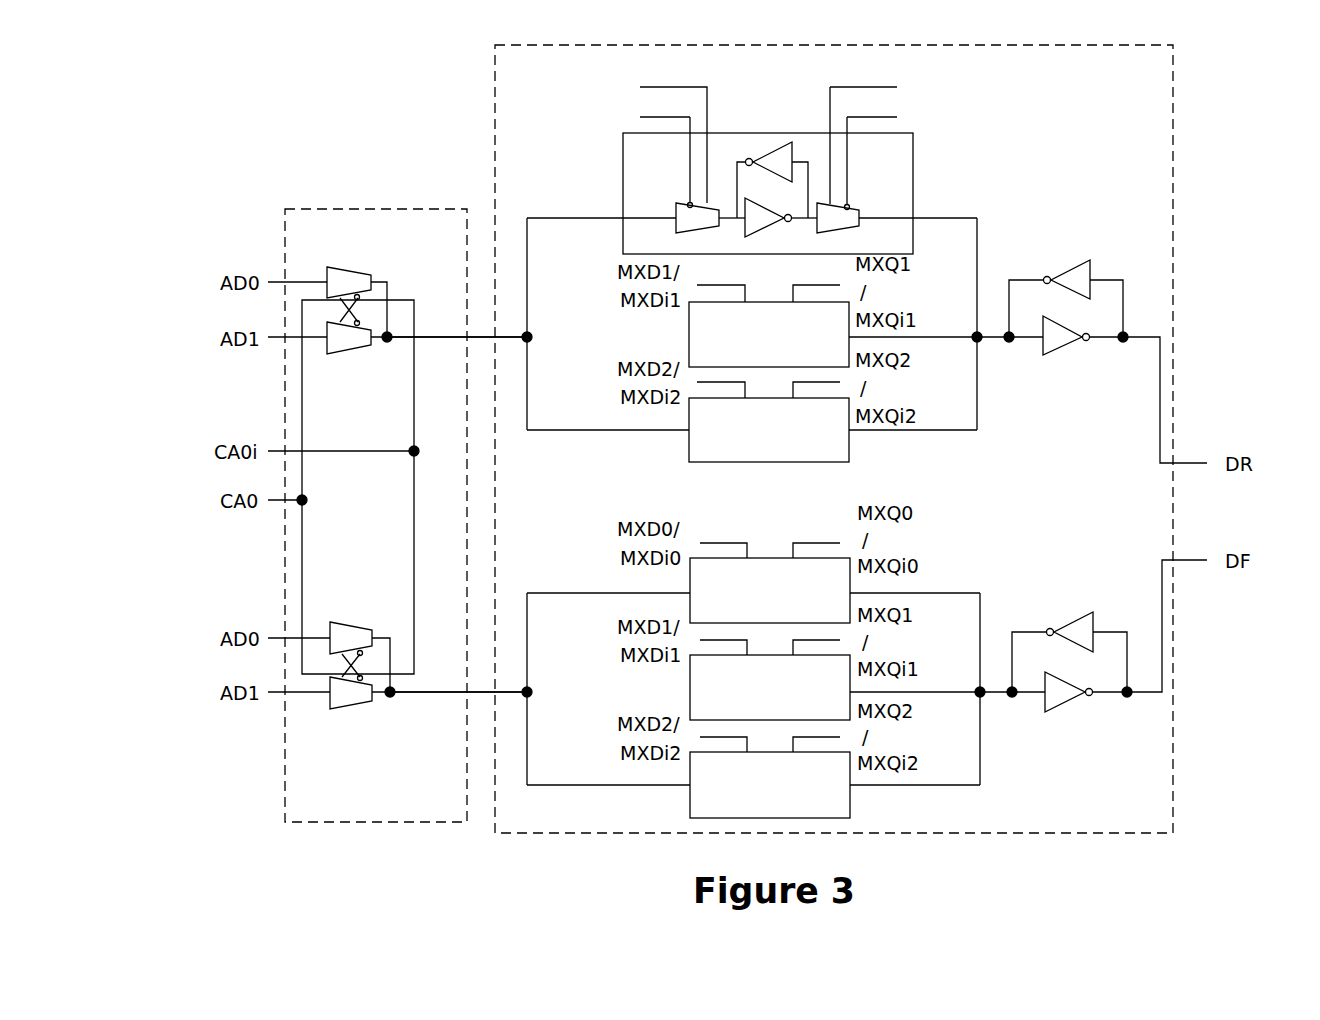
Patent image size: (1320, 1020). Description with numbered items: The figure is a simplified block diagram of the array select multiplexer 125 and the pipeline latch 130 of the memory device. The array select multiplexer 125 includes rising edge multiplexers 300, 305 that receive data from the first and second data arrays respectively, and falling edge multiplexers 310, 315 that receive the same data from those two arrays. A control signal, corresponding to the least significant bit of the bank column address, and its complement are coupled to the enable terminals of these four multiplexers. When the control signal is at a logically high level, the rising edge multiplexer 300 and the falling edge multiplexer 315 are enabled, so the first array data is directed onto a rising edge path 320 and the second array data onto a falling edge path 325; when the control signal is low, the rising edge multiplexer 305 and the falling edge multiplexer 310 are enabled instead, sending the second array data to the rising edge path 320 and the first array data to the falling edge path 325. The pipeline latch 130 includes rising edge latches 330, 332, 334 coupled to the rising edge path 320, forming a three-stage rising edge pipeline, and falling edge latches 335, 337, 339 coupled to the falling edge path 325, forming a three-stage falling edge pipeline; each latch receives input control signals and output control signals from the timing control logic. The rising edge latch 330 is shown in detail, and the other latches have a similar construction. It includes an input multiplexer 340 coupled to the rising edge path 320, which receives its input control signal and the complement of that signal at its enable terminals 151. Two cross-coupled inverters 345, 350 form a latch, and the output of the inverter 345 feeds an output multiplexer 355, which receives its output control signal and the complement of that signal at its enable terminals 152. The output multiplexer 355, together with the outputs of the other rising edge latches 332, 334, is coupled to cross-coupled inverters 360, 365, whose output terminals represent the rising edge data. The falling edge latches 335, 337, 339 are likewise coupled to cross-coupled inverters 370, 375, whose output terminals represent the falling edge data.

The array select multiplexer 125 is at (458, 809).
The pipeline latch 130 is at (1170, 825).
The enable terminals 151 is at (618, 94).
The enable terminals 152 is at (920, 95).
The rising edge multiplexer 300 is at (352, 268).
The rising edge multiplexer 305 is at (342, 356).
The falling edge multiplexer 310 is at (352, 622).
The falling edge multiplexer 315 is at (345, 711).
The rising edge path 320 is at (432, 338).
The falling edge path 325 is at (432, 690).
The rising edge latch 330 is at (905, 167).
The rising edge latch 332 is at (789, 347).
The rising edge latch 334 is at (789, 444).
The falling edge latch 335 is at (790, 603).
The falling edge latch 337 is at (790, 700).
The falling edge latch 339 is at (790, 797).
The input multiplexer 340 is at (675, 204).
The cross-coupled inverter 345 is at (740, 205).
The cross-coupled inverter 350 is at (770, 150).
The output multiplexer 355 is at (858, 205).
The cross-coupled inverter 360 is at (1065, 347).
The cross-coupled inverter 365 is at (1064, 262).
The cross-coupled inverter 370 is at (1063, 705).
The cross-coupled inverter 375 is at (1068, 618).